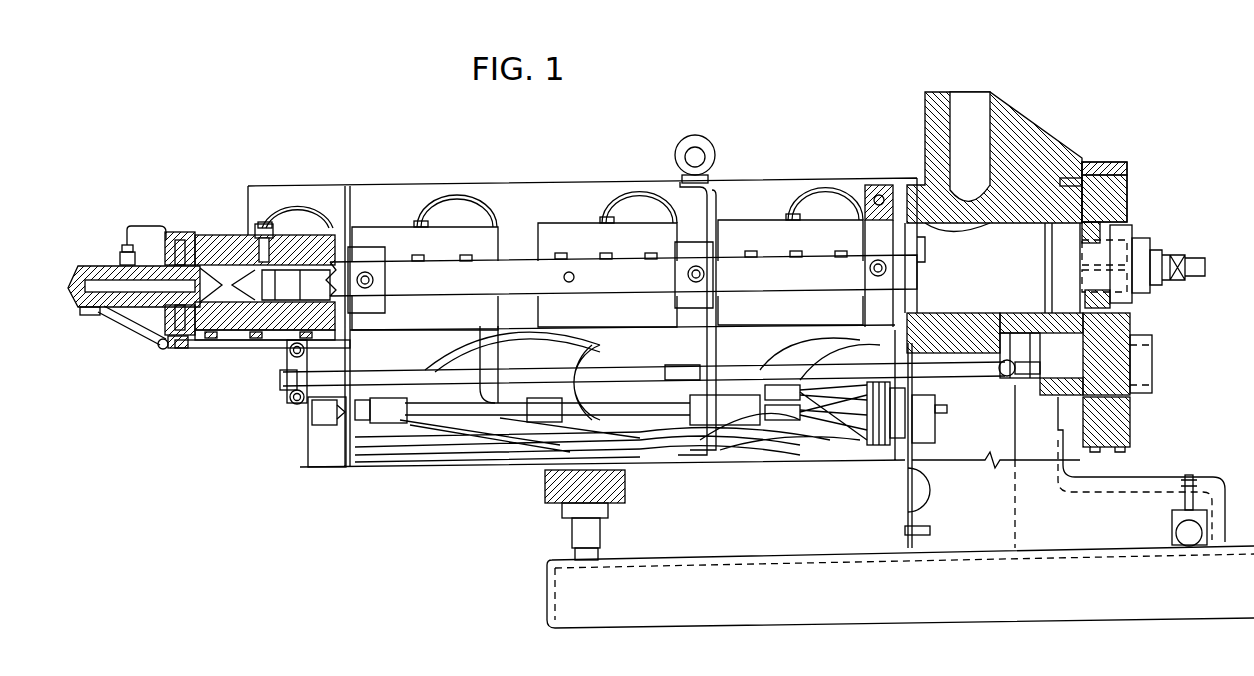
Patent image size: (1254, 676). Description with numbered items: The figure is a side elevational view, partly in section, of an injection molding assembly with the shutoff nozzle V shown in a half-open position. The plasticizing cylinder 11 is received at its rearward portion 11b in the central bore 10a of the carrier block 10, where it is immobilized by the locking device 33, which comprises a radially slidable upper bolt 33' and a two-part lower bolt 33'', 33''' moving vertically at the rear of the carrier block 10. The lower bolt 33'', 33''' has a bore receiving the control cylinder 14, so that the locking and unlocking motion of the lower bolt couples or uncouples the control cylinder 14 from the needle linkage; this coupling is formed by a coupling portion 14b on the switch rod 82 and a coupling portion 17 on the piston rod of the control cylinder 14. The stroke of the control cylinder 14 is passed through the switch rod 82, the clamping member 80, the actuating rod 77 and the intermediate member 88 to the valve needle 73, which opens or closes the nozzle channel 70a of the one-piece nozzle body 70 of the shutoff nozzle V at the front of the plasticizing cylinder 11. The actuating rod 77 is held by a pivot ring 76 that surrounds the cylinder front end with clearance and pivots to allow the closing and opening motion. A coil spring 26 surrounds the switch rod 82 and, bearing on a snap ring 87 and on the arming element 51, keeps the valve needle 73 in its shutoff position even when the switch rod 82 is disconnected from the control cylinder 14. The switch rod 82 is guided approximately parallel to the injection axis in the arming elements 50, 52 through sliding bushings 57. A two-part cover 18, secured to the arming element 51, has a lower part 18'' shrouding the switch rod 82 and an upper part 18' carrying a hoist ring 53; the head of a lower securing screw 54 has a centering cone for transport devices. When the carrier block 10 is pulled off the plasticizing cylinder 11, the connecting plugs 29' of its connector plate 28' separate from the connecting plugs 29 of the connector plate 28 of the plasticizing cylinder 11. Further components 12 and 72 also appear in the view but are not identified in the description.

The carrier block 10 is at (1045, 112).
The central bore 10a is at (1000, 226).
The plasticizing cylinder 11 is at (252, 235).
The rearward portion 11b is at (930, 259).
The drive shaft 12 is at (1195, 264).
The control cylinder 14 is at (1040, 396).
The coupling portion 14b is at (962, 316).
The coupling portion 17 is at (1010, 340).
The two-part cover 18 is at (582, 293).
The upper part of cover 18' is at (790, 203).
The lower part of cover 18'' is at (617, 425).
The coil spring 26 is at (685, 425).
The connector plate 28 is at (1031, 468).
The connector plate 28' is at (942, 500).
The connecting plugs 29 is at (847, 457).
The connecting plugs 29' is at (945, 445).
The locking device 33 is at (1095, 197).
The upper bolt 33' is at (1147, 207).
The lower bolt 33'' is at (1113, 350).
The lower bolt 33''' is at (1141, 469).
The arming element 50 is at (352, 250).
The arming element 51 is at (690, 240).
The arming element 52 is at (873, 198).
The hoist ring 53 is at (696, 140).
The lower securing screw 54 is at (705, 452).
The sliding bushings 57 is at (345, 432).
The nozzle body 70 is at (78, 255).
The nozzle channel 70a is at (203, 245).
The housing 72 is at (185, 335).
The valve needle 73 is at (98, 318).
The pivot ring 76 is at (178, 230).
The actuating rod 77 is at (230, 348).
The clamping member 80 is at (290, 404).
The switch rod 82 is at (384, 375).
The snap ring 87 is at (672, 378).
The intermediate member 88 is at (142, 322).
The shutoff nozzle V is at (82, 325).